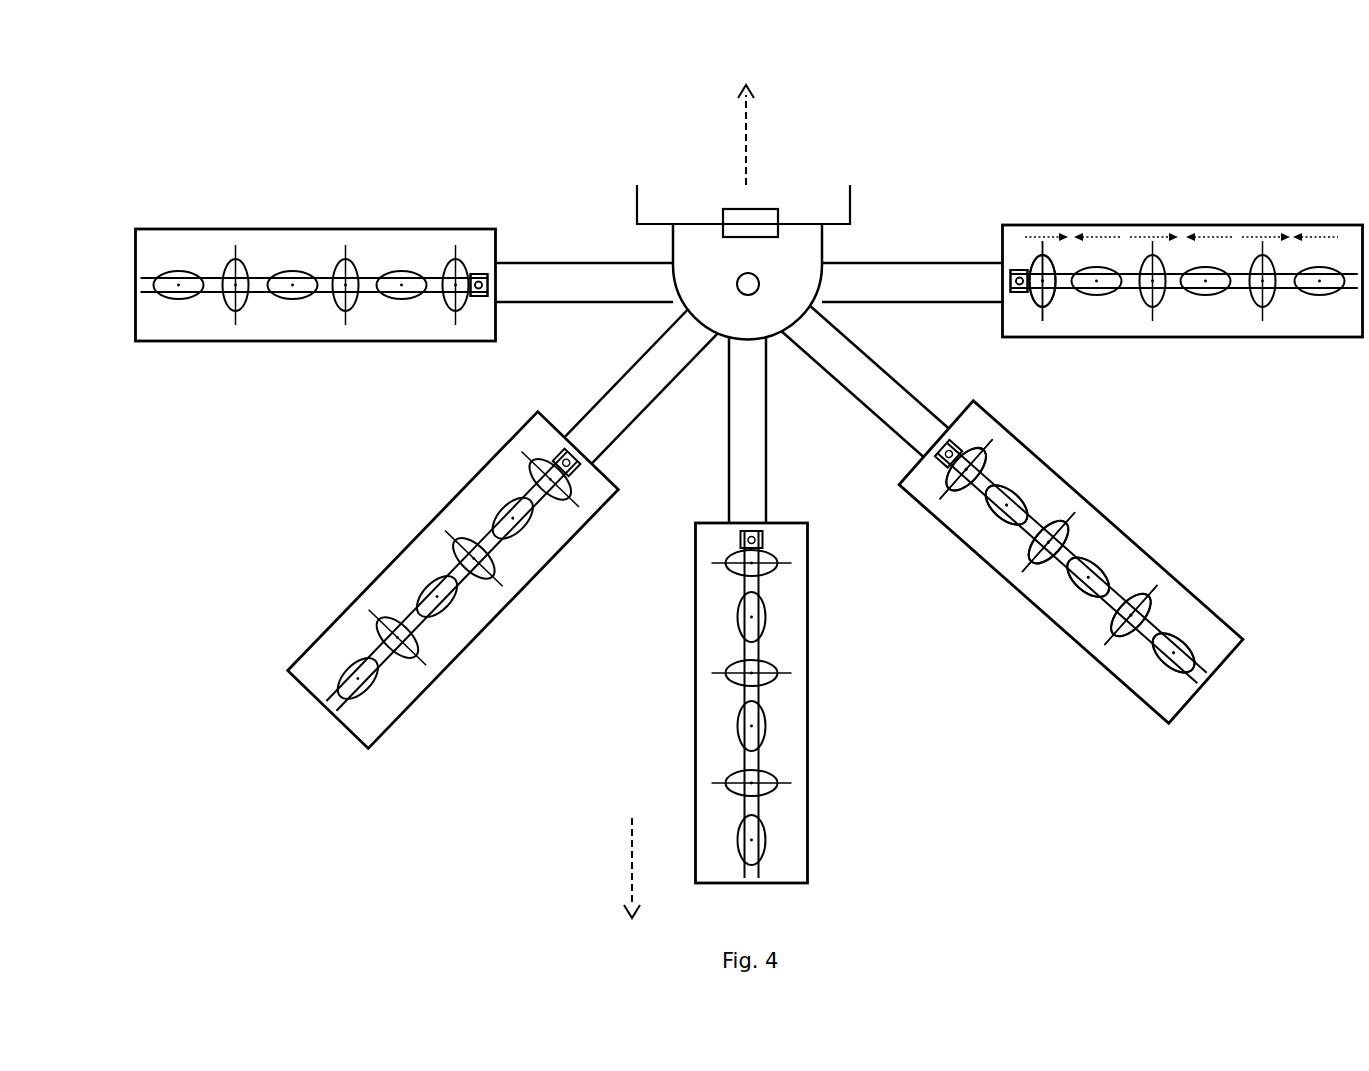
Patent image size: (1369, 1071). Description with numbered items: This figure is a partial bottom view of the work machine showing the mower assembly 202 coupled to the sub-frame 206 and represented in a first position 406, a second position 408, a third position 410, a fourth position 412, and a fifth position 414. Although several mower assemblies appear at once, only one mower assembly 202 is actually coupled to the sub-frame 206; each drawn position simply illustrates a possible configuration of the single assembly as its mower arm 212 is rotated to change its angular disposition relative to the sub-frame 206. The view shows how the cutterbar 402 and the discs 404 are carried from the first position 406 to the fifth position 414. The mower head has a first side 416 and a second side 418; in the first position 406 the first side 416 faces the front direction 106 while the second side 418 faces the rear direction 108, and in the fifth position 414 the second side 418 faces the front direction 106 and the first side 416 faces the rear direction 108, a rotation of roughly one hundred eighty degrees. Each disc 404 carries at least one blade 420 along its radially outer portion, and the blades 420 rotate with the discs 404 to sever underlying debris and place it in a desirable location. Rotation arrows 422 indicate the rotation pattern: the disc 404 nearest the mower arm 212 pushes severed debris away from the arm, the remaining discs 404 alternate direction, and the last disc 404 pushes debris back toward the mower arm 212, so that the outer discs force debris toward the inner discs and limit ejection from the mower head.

The mower assembly 202 is at (156, 148).
The front direction 106 is at (746, 141).
The rear direction 108 is at (632, 863).
The sub-frame 206 is at (780, 262).
The mower arm 212 is at (554, 276).
The cutterbar 402 is at (1236, 290).
The discs 404 is at (960, 482).
The first position 406 is at (1317, 220).
The second position 408 is at (1130, 521).
The third position 410 is at (826, 685).
The fourth position 412 is at (265, 640).
The fifth position 414 is at (306, 210).
The first side 416 is at (333, 341).
The second side 418 is at (440, 229).
The blade 420 is at (1042, 313).
The rotation arrows 422 is at (1307, 237).